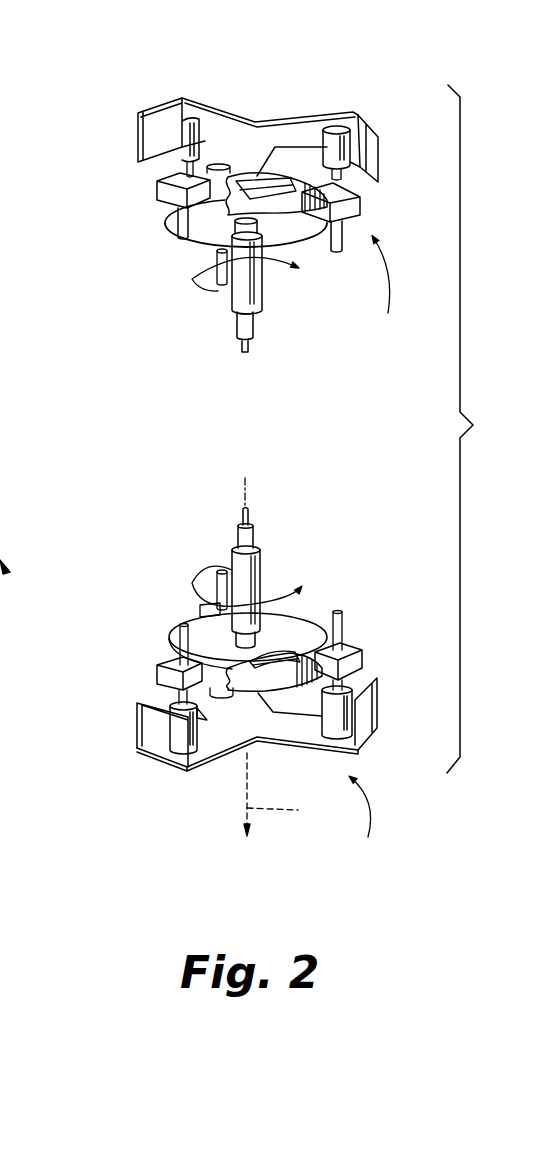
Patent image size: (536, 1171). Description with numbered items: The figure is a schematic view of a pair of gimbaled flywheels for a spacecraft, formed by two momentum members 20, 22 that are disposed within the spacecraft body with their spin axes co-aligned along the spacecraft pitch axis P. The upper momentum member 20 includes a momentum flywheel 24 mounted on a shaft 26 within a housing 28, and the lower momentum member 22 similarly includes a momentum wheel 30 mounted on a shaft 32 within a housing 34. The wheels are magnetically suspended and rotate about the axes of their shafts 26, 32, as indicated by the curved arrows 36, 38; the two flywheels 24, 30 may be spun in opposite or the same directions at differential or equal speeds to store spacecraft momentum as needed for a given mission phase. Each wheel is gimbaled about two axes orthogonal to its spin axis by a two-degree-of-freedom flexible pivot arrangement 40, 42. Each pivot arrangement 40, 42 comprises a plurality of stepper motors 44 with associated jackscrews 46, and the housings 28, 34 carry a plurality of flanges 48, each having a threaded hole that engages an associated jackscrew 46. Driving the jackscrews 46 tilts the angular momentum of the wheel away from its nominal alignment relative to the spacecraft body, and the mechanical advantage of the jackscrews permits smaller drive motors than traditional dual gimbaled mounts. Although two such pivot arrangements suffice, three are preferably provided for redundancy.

The momentum member 20 is at (158, 255).
The momentum member 22 is at (179, 607).
The momentum flywheel 24 is at (245, 182).
The shaft 26 is at (242, 297).
The housing 28 is at (313, 250).
The momentum wheel 30 is at (257, 692).
The shaft 32 is at (235, 560).
The housing 34 is at (315, 625).
The curved arrow 36 is at (192, 279).
The curved arrow 38 is at (197, 570).
The two-degree-of-freedom flexible pivot arrangement 40 is at (383, 296).
The two-degree-of-freedom flexible pivot arrangement 42 is at (366, 824).
The stepper motor 44 is at (187, 128).
The jackscrew 46 is at (163, 226).
The flange 48 is at (157, 187).